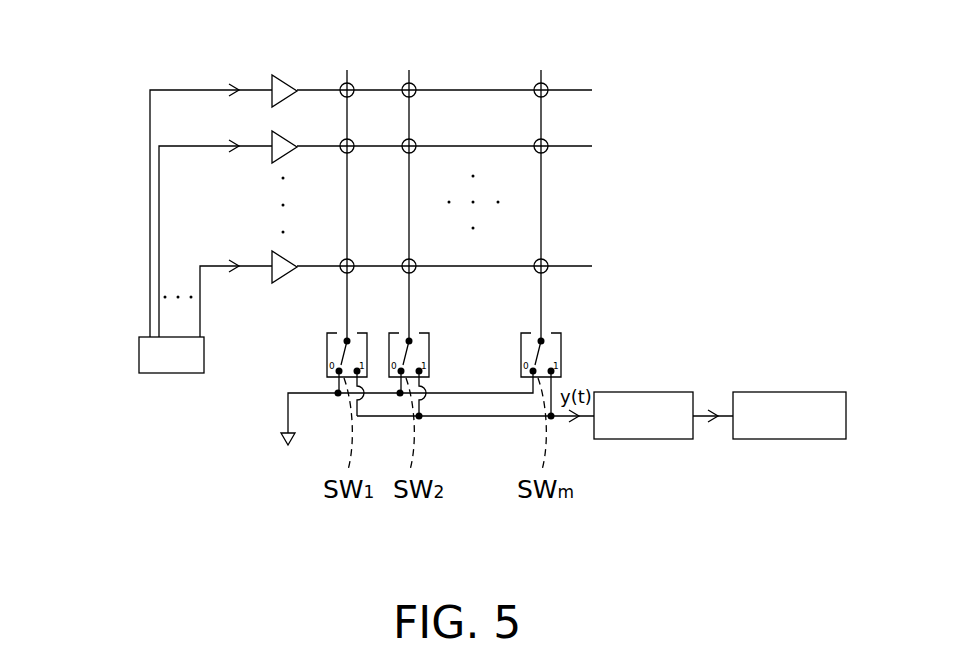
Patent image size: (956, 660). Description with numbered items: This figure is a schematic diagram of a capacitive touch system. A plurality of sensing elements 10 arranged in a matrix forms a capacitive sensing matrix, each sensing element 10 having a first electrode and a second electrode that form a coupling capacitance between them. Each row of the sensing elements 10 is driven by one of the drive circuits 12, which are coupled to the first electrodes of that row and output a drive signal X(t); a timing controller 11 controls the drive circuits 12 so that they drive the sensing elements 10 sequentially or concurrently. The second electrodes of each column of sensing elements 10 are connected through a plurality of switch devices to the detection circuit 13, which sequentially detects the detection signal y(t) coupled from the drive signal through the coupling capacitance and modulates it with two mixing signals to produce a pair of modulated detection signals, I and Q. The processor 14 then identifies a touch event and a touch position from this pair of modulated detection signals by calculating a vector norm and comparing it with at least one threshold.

The sensing element 10 is at (413, 85).
The timing controller 11 is at (139, 360).
The drive circuit 12 is at (281, 76).
The detection circuit 13 is at (644, 440).
The processor 14 is at (783, 440).